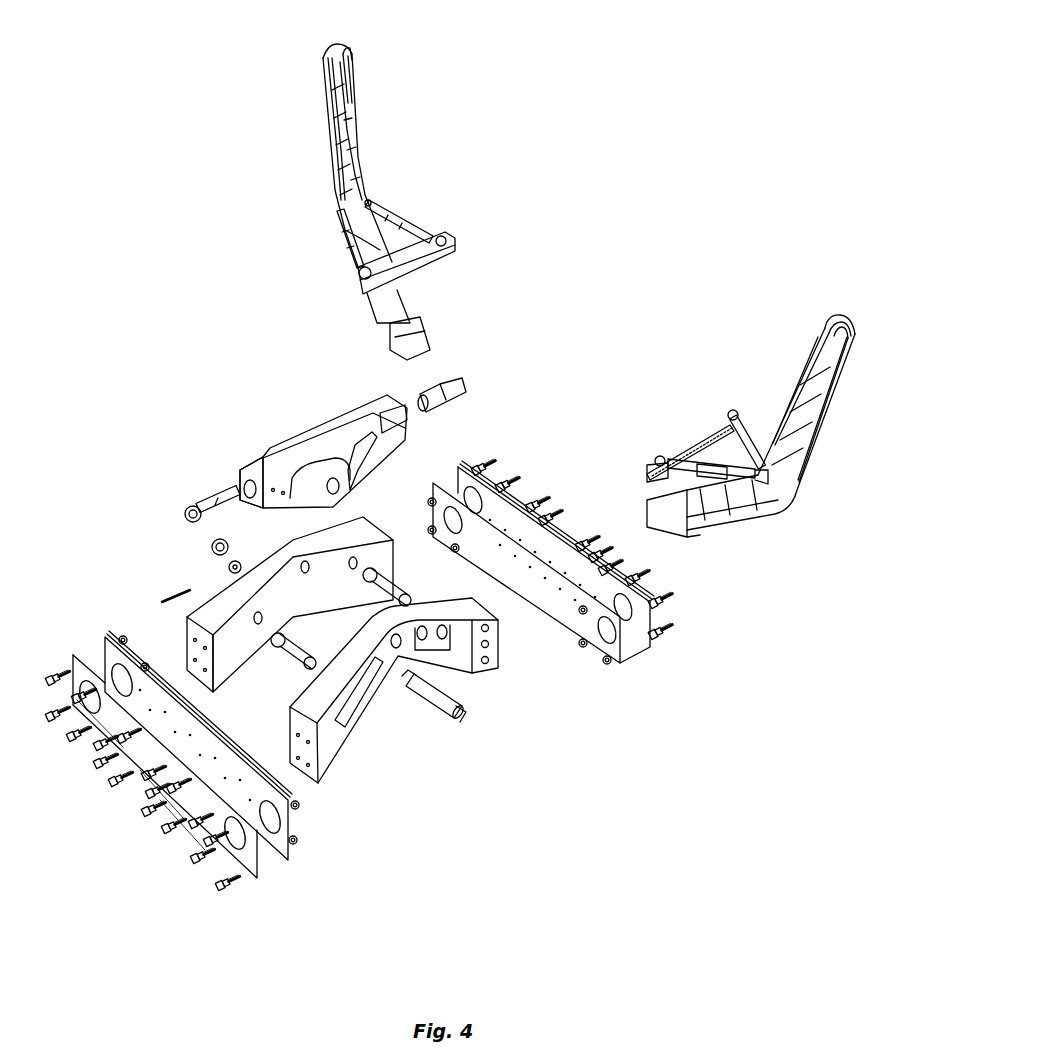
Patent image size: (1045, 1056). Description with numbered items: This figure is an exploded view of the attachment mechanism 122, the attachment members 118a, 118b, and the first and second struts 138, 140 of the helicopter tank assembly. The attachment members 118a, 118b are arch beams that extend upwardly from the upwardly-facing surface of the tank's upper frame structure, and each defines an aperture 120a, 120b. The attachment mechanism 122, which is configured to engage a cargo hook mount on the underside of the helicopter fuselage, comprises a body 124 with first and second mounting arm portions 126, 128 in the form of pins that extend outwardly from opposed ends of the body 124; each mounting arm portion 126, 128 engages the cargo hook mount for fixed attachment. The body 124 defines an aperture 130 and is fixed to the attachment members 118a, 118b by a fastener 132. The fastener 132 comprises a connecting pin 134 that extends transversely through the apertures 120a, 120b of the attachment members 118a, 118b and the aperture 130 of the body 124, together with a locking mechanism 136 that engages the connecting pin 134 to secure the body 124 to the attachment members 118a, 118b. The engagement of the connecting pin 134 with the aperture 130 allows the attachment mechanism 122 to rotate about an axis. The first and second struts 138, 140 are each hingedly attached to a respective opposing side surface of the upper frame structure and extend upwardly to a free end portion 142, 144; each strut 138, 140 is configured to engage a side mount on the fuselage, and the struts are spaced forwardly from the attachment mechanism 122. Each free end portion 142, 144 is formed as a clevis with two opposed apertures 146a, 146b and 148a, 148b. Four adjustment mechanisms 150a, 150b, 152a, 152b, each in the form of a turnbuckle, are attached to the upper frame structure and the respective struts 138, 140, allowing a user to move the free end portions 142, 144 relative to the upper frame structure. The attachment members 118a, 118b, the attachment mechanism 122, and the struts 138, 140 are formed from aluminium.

The attachment member 118a is at (310, 762).
The attachment member 118b is at (205, 620).
The aperture 120a is at (398, 643).
The aperture 120b is at (310, 570).
The attachment mechanism 122 is at (243, 468).
The body 124 is at (360, 412).
The first mounting arm portion 126 is at (450, 388).
The second mounting arm portion 128 is at (192, 515).
The aperture 130 is at (333, 487).
The fastener 132 is at (422, 696).
The connecting pin 134 is at (462, 722).
The locking mechanism 136 is at (217, 547).
The first strut 138 is at (797, 463).
The second strut 140 is at (355, 160).
The free end portion 142 is at (843, 358).
The free end portion 144 is at (350, 97).
The aperture 146a is at (827, 340).
The aperture 146b is at (850, 325).
The aperture 148a is at (330, 62).
The aperture 148b is at (342, 57).
The adjustment mechanism 150a is at (707, 475).
The adjustment mechanism 150b is at (753, 440).
The adjustment mechanism 152a is at (350, 242).
The adjustment mechanism 152b is at (405, 228).